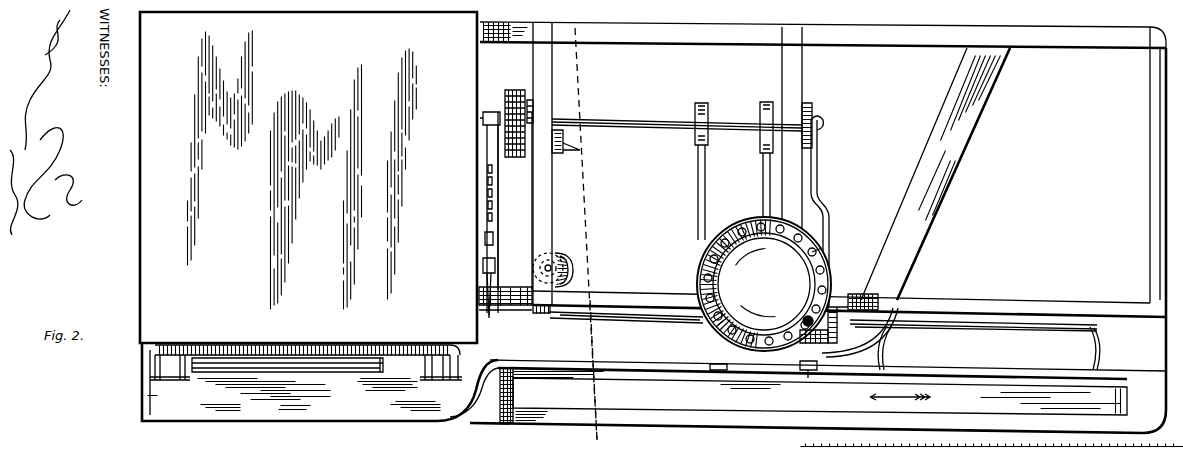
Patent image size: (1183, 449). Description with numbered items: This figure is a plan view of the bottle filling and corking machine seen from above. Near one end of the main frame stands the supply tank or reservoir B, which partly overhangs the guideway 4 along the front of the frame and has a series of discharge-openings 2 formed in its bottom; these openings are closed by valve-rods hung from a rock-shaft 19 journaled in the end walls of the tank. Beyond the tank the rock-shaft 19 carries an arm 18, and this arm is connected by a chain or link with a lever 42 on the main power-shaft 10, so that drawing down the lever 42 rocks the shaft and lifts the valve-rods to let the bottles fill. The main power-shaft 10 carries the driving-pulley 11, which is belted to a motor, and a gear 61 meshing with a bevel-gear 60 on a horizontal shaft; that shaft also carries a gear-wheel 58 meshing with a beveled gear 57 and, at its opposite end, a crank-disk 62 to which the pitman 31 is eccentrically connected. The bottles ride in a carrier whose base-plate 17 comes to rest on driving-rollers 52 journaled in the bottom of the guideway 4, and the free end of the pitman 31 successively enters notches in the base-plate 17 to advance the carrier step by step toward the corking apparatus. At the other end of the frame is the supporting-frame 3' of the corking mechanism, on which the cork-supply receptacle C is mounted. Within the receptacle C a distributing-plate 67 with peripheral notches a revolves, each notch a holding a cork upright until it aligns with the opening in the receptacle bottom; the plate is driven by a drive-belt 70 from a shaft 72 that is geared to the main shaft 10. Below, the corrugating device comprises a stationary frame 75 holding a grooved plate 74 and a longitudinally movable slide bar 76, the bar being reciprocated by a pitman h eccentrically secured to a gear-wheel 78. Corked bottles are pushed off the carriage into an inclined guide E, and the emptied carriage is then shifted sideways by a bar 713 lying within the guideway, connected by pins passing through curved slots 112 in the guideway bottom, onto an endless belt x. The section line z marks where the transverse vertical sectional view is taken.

The discharge-openings 2 is at (582, 223).
The section line Z Z z is at (593, 374).
The supporting-frame of the corking mechanism 3' is at (823, 169).
The guideway 4 is at (287, 370).
The main power-shaft 10 is at (497, 112).
The driving-pulley 11 is at (515, 113).
The base-plate of the bottle-carrier 17 is at (306, 345).
The arm 18 is at (485, 238).
The rock-shaft 19 is at (483, 265).
The pitman 31 is at (630, 318).
The arm or lever 42 is at (506, 211).
The driving-rollers 52 is at (172, 387).
The beveled gear 57 is at (566, 266).
The gear-wheel 58 is at (573, 282).
The bevel-gear 60 is at (580, 152).
The gear 61 is at (541, 111).
The crank-disk 62 is at (536, 316).
The distributing-plate 67 is at (822, 248).
The drive-belt 70 is at (765, 190).
The shaft 72 is at (688, 119).
The stationary corrugated plate 74 is at (801, 360).
The stationary horizontal frame 75 is at (830, 343).
The slide plate or bar 76 is at (830, 310).
The gear-wheel 78 is at (816, 122).
The curved slots 112 is at (1003, 348).
The bar 713 is at (973, 329).
The peripheral notches a is at (702, 262).
The supply tank or reservoir B is at (308, 177).
The cork-supply receptacle C is at (764, 284).
The inclined guide E is at (955, 172).
The pitman h is at (822, 211).
The endless belt x is at (818, 230).